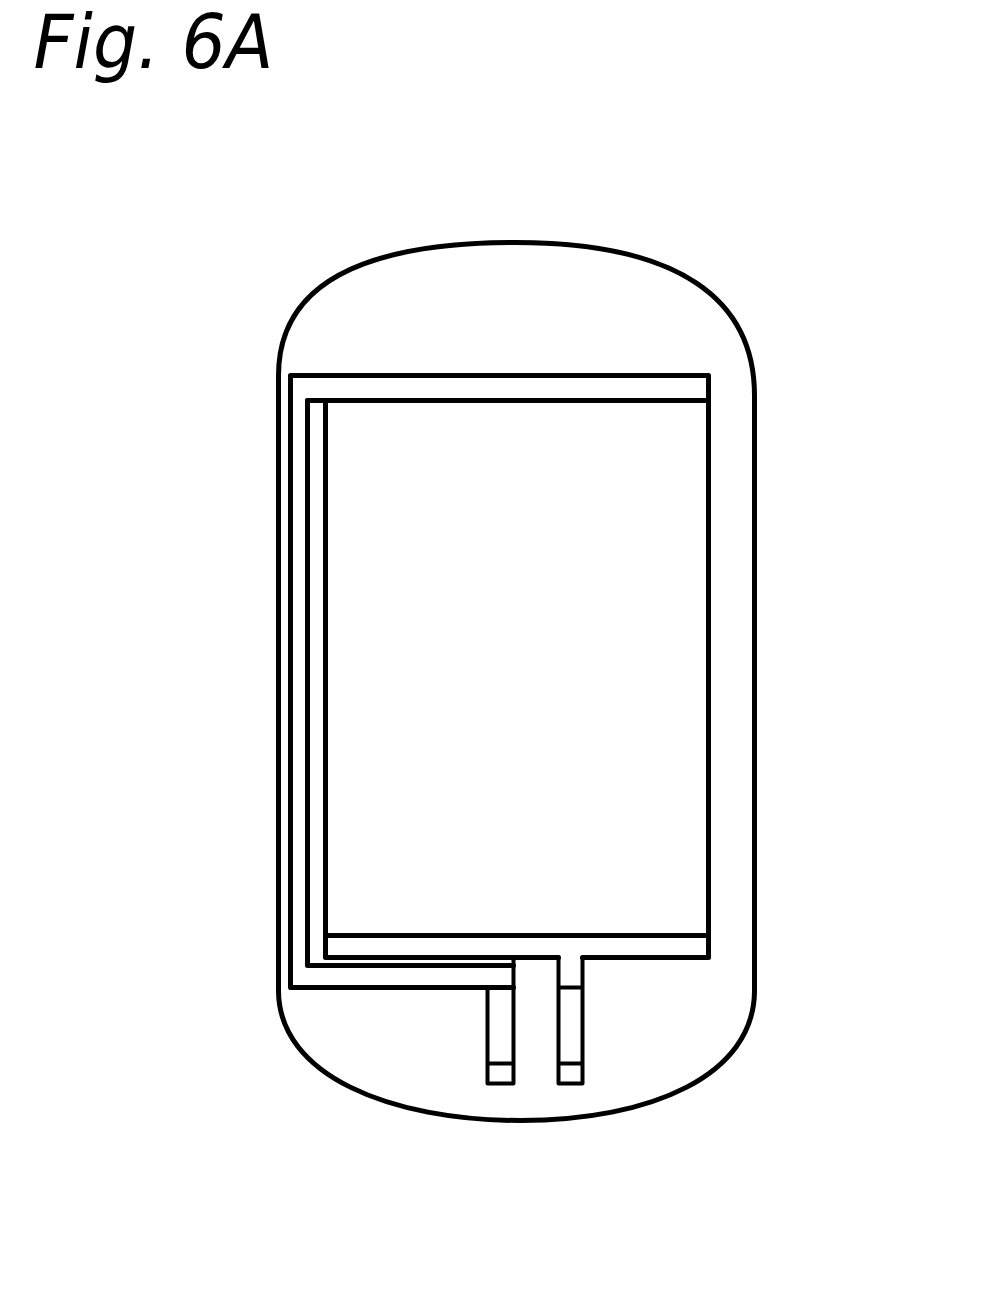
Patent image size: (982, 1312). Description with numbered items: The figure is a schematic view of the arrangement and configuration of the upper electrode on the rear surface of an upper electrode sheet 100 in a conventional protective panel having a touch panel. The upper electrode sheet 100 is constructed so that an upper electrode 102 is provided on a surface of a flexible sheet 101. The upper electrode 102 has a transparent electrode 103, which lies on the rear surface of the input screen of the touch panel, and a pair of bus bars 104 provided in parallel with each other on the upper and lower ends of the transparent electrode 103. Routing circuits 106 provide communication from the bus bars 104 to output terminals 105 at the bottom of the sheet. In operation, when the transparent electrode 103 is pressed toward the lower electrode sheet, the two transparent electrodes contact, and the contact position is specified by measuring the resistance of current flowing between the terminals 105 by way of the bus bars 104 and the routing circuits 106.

The upper electrode sheet 100 is at (687, 320).
The flexible sheet 101 is at (508, 265).
The upper electrode 102 is at (663, 590).
The transparent electrode 103 is at (548, 809).
The bus bars 104 is at (357, 385).
The output terminals 105 is at (498, 1072).
The routing circuits 106 is at (363, 978).